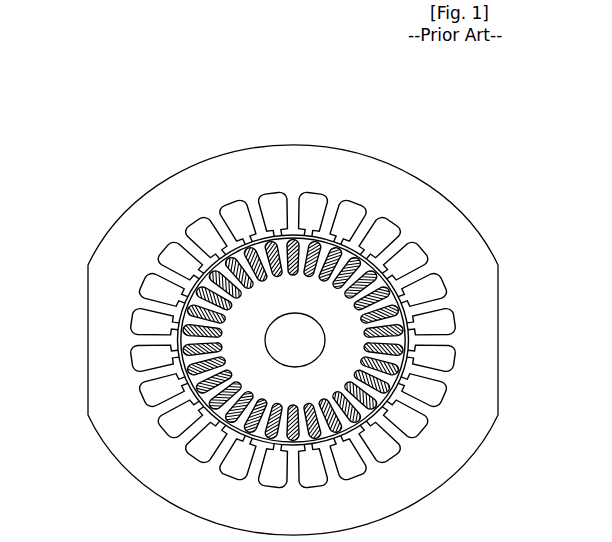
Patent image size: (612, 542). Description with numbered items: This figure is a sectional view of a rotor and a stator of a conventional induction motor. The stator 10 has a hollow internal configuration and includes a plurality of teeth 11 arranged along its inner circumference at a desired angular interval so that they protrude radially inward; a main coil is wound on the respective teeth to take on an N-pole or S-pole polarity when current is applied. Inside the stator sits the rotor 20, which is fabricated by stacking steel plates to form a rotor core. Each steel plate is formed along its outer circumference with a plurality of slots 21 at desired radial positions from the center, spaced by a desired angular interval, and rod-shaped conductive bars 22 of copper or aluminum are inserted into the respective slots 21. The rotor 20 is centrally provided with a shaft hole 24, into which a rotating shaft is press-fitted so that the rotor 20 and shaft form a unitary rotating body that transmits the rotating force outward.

The stator 10 is at (448, 194).
The teeth 11 is at (440, 330).
The rotor 20 is at (298, 282).
The slots 21 is at (192, 353).
The conductive bars 22 is at (205, 392).
The shaft hole 24 is at (268, 340).